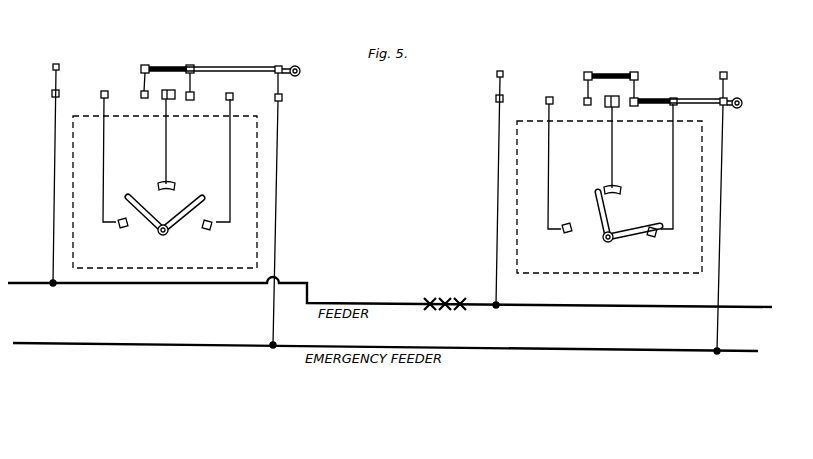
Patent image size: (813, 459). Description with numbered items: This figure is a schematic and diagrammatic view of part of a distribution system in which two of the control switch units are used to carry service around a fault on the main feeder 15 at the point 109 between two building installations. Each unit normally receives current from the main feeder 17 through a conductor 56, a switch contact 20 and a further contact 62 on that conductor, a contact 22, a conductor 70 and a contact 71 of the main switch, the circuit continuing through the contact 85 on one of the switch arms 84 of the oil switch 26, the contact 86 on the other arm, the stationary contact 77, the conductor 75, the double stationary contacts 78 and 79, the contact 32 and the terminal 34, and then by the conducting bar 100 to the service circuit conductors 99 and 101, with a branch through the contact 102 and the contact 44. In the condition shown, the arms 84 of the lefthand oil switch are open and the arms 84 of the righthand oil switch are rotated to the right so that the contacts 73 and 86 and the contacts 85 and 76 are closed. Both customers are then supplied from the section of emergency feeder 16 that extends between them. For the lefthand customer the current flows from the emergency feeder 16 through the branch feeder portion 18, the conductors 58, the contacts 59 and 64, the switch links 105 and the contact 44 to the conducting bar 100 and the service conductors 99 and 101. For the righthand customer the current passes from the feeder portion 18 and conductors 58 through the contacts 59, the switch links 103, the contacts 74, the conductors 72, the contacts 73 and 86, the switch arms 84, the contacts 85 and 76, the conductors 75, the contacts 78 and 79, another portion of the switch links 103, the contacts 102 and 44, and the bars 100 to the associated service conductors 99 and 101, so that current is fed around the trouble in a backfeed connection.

The main feeder 15 is at (546, 308).
The emergency feeder 16 is at (562, 348).
The main feeder 17 is at (496, 272).
The branch feeder portion 18 is at (735, 283).
The switch contact 20 is at (495, 98).
The contact 22 is at (545, 99).
The oil switch 26 is at (389, 241).
The contact 32 is at (584, 103).
The terminal 34 is at (583, 76).
The contact 44 is at (639, 76).
The conductor 56 is at (497, 178).
The conductor 58 is at (721, 188).
The contact 59 is at (728, 98).
The contact 62 is at (501, 63).
The contact 64 is at (723, 71).
The conductor 70 is at (547, 178).
The contact 71 is at (339, 235).
The conductor 72 is at (675, 177).
The switch contact 73 is at (438, 237).
The contact 74 is at (673, 97).
The conductor 75 is at (611, 150).
The switch contact 76 is at (606, 186).
The stationary contact 77 is at (620, 187).
The double stationary contact 78 is at (598, 126).
The double stationary contact 79 is at (622, 124).
The switch arm 84 is at (640, 262).
The contact 85 is at (596, 194).
The contact 86 is at (658, 222).
The conductor 99 is at (587, 72).
The conducting bar 100 is at (612, 73).
The conductor 101 is at (636, 72).
The contact 102 is at (638, 104).
The switch link 103 is at (743, 104).
The switch link 105 is at (297, 66).
The point 109 is at (425, 302).